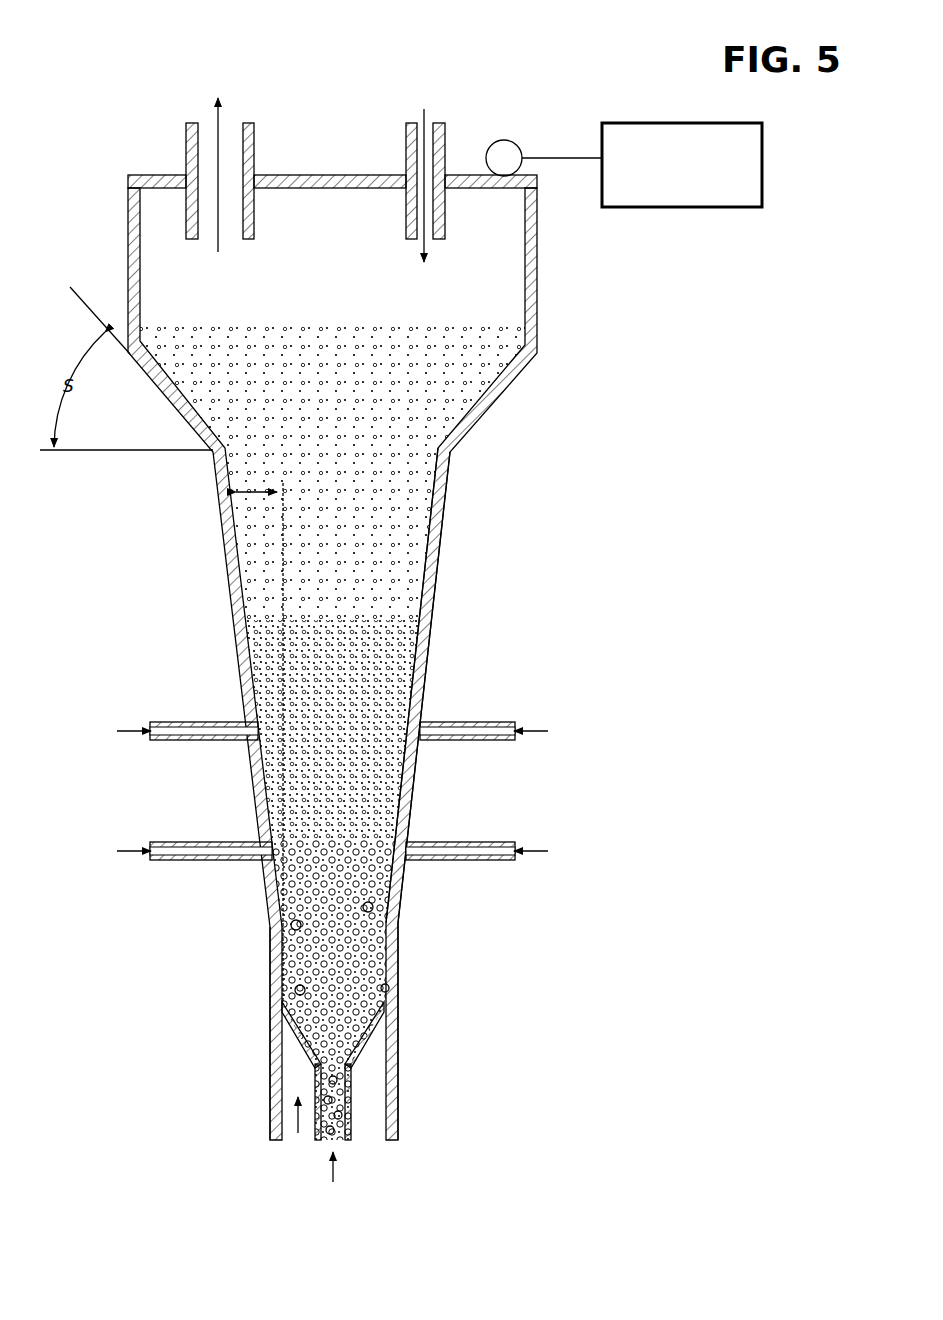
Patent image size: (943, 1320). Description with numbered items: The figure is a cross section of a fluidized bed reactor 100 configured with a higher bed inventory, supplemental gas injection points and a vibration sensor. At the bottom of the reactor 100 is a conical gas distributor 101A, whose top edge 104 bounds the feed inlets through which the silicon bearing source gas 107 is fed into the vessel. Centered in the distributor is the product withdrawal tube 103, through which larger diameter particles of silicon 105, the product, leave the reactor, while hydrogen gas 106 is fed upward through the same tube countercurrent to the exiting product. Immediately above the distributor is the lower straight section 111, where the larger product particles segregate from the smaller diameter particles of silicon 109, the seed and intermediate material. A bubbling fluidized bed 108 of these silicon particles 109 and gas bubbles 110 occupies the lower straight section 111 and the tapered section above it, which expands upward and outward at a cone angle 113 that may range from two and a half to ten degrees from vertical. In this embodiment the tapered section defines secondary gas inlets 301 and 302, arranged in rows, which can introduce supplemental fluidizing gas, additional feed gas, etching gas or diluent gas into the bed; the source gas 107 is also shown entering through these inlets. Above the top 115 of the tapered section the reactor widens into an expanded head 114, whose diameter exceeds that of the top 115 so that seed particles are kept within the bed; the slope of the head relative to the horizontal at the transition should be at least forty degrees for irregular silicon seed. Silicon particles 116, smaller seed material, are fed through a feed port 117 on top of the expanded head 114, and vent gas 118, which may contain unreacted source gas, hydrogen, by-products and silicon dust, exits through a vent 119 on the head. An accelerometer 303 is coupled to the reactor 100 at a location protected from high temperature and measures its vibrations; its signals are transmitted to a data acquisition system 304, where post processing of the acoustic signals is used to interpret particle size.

The fluidized bed reactor 100 is at (574, 96).
The conical gas distributor 101A is at (368, 1040).
The product withdrawal tube 103 is at (350, 1132).
The top edge of the gas distributor 104 is at (296, 1052).
The larger diameter particles of silicon (product) 105 is at (352, 1098).
The hydrogen gas 106 is at (333, 1170).
The silicon bearing source gas 107 is at (126, 731).
The bubbling fluidized bed 108 is at (402, 950).
The smaller diameter particles of silicon 109 is at (405, 803).
The gas bubbles 110 is at (296, 922).
The lower straight section 111 is at (252, 963).
The cone angle 113 is at (256, 492).
The expanded head 114 is at (560, 281).
The top of the tapered section 115 is at (484, 428).
The silicon particles 116 is at (422, 112).
The feed port 117 is at (437, 250).
The vent gas 118 is at (220, 247).
The vent 119 is at (210, 264).
The secondary gas inlet 301 is at (182, 842).
The secondary gas inlet 302 is at (192, 722).
The accelerometer 303 is at (503, 140).
The data acquisition system 304 is at (685, 207).